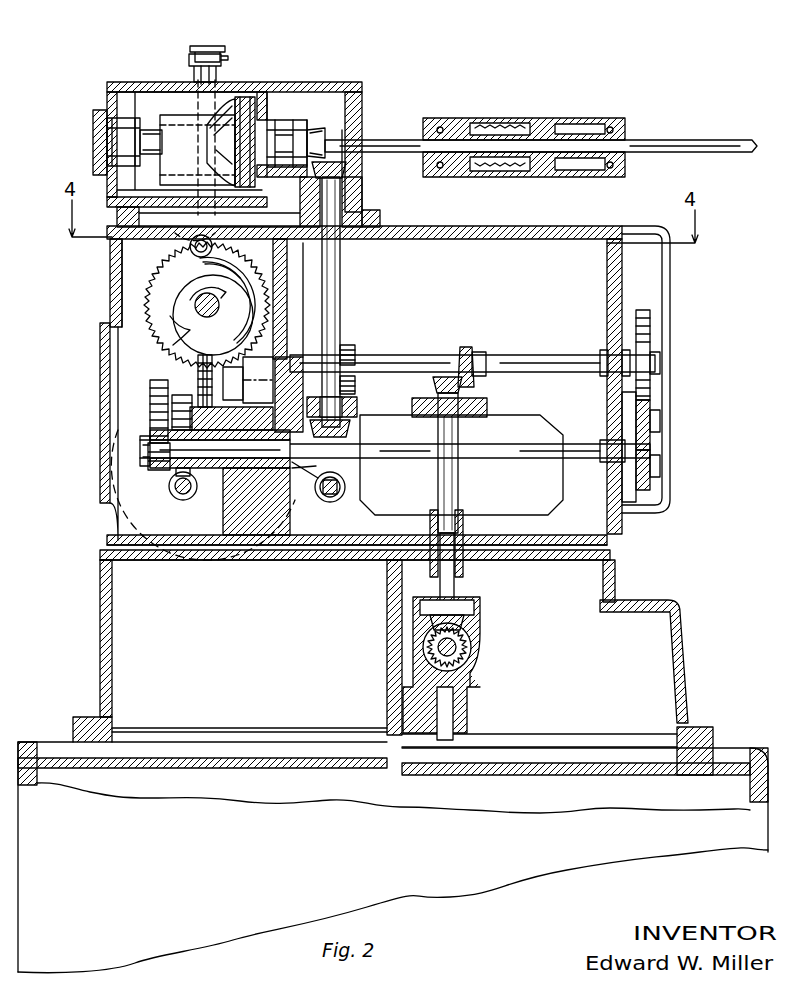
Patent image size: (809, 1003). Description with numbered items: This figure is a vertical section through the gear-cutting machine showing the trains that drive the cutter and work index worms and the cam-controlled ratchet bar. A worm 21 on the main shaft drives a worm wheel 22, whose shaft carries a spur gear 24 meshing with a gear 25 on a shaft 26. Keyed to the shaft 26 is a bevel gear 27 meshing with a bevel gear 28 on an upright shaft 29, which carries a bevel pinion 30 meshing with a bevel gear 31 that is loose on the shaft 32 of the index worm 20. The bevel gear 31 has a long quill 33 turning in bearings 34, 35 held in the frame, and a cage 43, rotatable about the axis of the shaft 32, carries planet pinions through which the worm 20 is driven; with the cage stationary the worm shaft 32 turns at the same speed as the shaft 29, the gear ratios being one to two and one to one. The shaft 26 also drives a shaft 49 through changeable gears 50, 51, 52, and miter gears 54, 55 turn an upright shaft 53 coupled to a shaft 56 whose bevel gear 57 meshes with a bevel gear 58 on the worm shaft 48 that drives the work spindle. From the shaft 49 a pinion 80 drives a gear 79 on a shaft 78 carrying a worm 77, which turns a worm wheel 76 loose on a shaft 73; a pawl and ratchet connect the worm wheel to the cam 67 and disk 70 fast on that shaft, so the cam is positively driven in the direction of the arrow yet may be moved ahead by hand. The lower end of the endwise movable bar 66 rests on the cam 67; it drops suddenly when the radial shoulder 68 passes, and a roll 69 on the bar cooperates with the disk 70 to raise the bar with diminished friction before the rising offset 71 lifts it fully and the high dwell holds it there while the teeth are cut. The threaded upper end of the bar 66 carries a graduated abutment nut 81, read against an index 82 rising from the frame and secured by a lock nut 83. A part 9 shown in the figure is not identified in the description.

The shaft 9 is at (189, 498).
The index worm 20 is at (492, 128).
The worm 21 is at (178, 498).
The worm wheel 22 is at (183, 395).
The spur gear 24 is at (152, 382).
The gear 25 is at (160, 470).
The shaft 26 is at (390, 462).
The bevel gear 27 is at (338, 472).
The bevel gear 28 is at (350, 432).
The upright shaft 29 is at (332, 297).
The bevel pinion 30 is at (345, 160).
The bevel gear 31 is at (318, 133).
The worm shaft 32 is at (370, 140).
The quill 33 is at (290, 120).
The bearing 34 is at (266, 97).
The bearing 35 is at (300, 122).
The cage 43 is at (190, 150).
The worm shaft 48 is at (470, 668).
The shaft 49 is at (532, 358).
The changeable gear 50 is at (650, 478).
The changeable gear 51 is at (650, 428).
The changeable gear 52 is at (650, 326).
The upright shaft 53 is at (456, 486).
The miter gear 54 is at (466, 352).
The miter gear 55 is at (436, 383).
The shaft 56 is at (457, 588).
The bevel gear 57 is at (470, 628).
The bevel gear 58 is at (470, 647).
The ratchet bar 66 is at (205, 100).
The cam 67 is at (212, 256).
The radial offset 68 is at (205, 264).
The roll 69 is at (190, 248).
The disk 70 is at (170, 330).
The rising offset 71 is at (196, 372).
The shaft 73 is at (219, 300).
The worm wheel 76 is at (152, 282).
The worm 77 is at (205, 375).
The shaft 78 is at (285, 350).
The gear 79 is at (355, 386).
The pinion 80 is at (350, 350).
The abutment nut 81 is at (190, 60).
The index 82 is at (215, 62).
The lock nut 83 is at (195, 48).